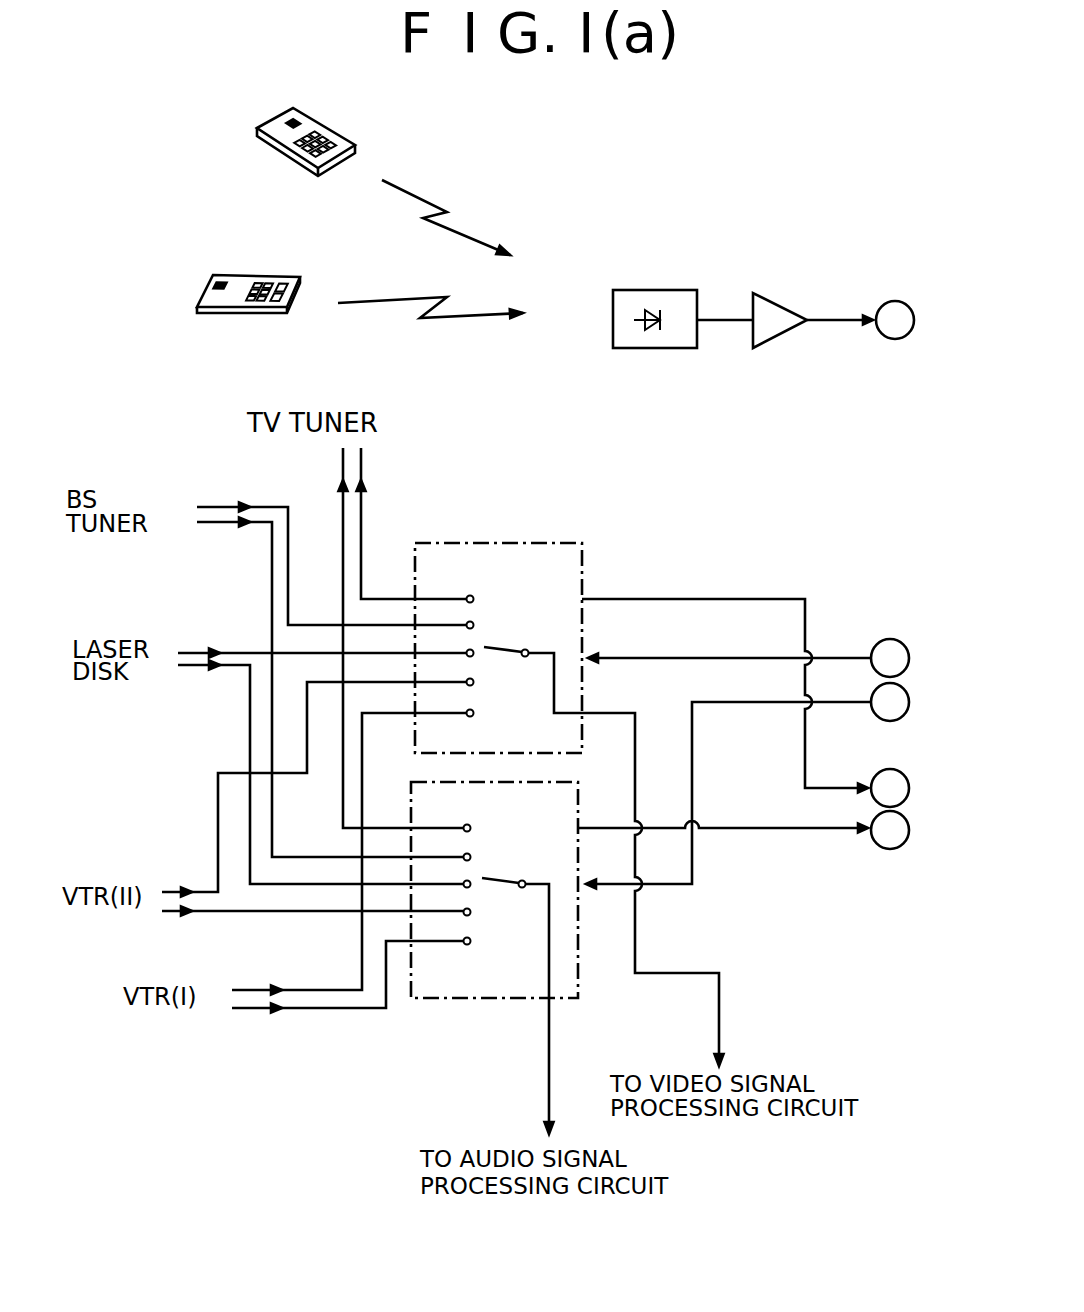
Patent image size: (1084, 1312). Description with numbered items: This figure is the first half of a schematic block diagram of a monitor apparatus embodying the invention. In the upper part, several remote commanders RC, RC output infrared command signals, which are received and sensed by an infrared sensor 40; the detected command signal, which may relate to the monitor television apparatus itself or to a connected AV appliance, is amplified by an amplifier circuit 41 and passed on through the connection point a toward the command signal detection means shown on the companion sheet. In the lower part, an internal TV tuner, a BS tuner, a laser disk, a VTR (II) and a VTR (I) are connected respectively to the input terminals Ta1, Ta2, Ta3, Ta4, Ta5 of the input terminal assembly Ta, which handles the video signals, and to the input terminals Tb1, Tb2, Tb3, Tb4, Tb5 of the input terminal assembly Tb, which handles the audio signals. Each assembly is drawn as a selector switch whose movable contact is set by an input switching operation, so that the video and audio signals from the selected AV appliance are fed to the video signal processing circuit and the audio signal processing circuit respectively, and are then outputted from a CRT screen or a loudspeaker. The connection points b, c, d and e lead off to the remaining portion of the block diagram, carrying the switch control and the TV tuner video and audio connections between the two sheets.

The remote commander RC is at (334, 132).
The infrared sensor 40 is at (648, 290).
The amplifier circuit 41 is at (784, 308).
The remote control signal terminal a is at (860, 320).
The video switch control terminal b is at (748, 658).
The audio switch control terminal c is at (747, 786).
The TV tuner video output terminal d is at (745, 703).
The TV tuner audio output terminal e is at (743, 830).
The input terminal assembly Ta is at (569, 767).
The input terminal assembly Tb is at (493, 958).
The input terminal Ta1 is at (471, 596).
The input terminal Ta2 is at (473, 624).
The input terminal Ta3 is at (473, 655).
The input terminal Ta4 is at (473, 684).
The input terminal Ta5 is at (468, 716).
The input terminal Tb1 is at (470, 825).
The input terminal Tb2 is at (470, 855).
The input terminal Tb3 is at (470, 886).
The input terminal Tb4 is at (470, 914).
The input terminal Tb5 is at (448, 965).